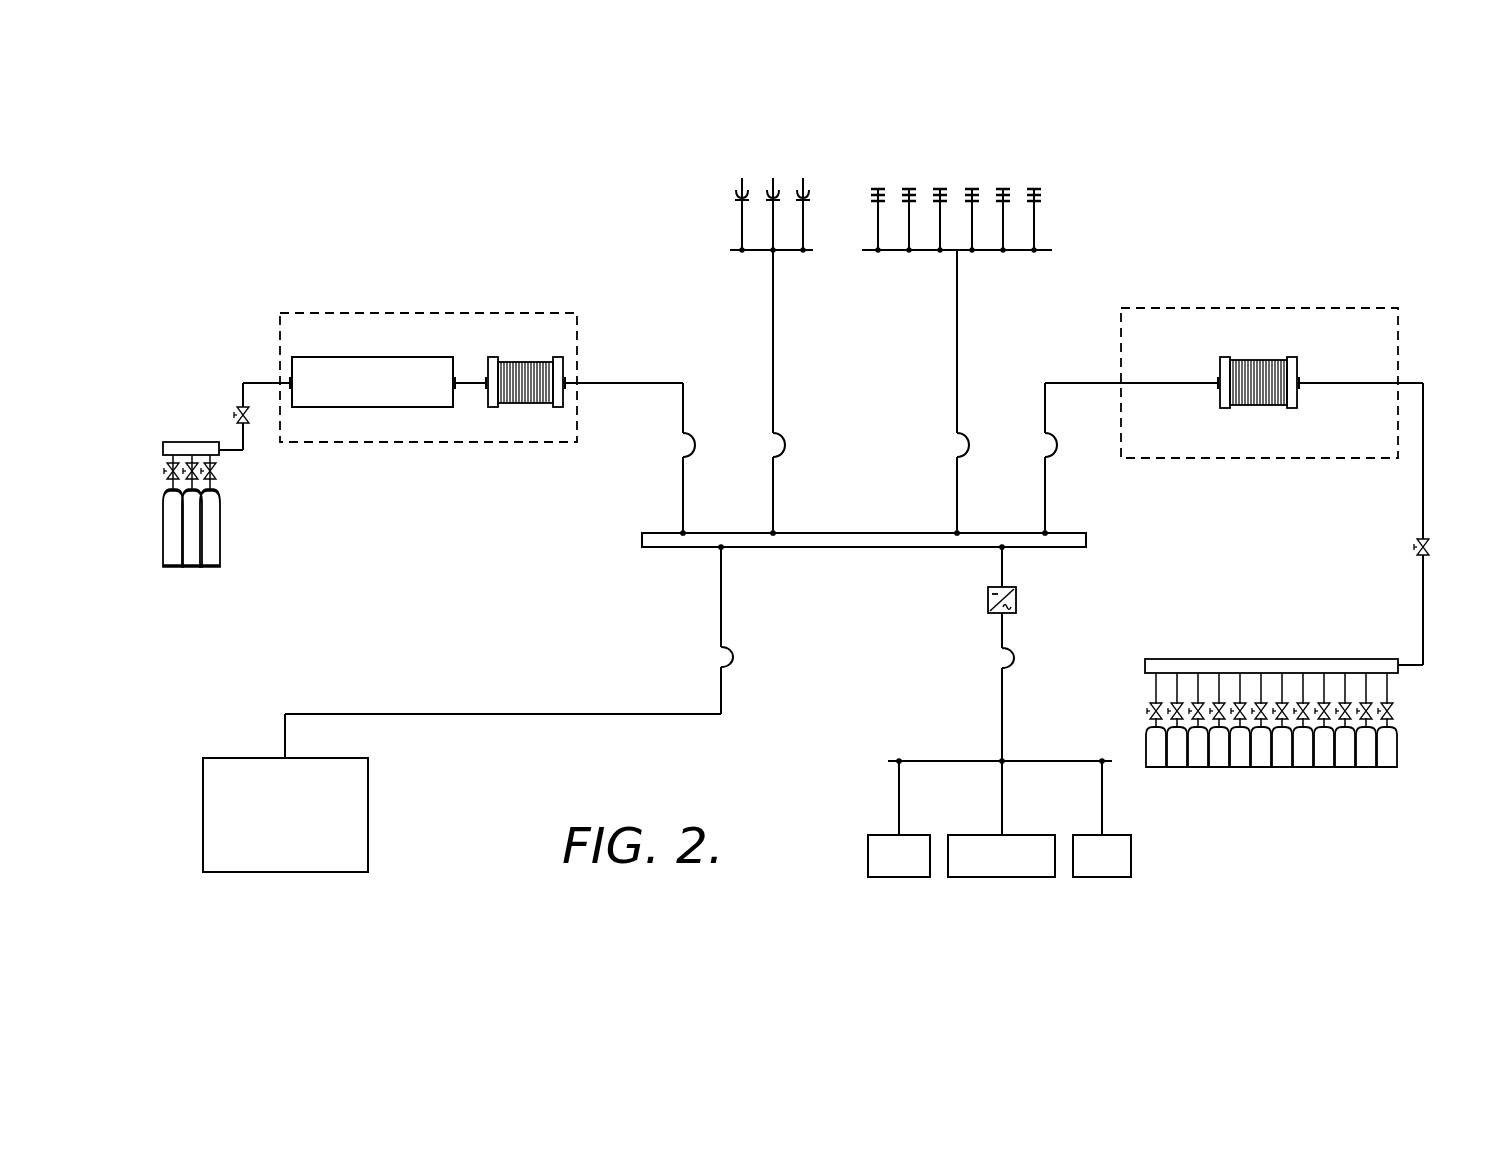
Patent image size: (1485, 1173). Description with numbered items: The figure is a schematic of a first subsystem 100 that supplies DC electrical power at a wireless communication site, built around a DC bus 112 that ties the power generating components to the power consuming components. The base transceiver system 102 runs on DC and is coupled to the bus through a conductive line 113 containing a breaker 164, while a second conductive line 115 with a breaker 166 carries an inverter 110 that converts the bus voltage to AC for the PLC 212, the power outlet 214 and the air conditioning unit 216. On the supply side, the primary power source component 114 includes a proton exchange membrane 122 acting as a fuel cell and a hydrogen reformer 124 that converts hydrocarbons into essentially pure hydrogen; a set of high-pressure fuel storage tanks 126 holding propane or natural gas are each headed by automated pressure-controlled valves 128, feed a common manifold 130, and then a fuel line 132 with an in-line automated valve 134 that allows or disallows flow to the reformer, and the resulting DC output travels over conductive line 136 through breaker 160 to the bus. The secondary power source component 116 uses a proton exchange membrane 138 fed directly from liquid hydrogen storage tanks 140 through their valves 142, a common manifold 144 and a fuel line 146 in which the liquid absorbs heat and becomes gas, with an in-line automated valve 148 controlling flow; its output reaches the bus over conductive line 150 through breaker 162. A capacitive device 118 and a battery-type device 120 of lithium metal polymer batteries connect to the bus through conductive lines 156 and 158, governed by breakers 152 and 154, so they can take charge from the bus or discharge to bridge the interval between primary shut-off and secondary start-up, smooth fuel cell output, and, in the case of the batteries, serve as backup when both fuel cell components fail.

The first subsystem 100 is at (1130, 142).
The base transceiver system 102 is at (368, 815).
The inverter 110 is at (1016, 597).
The DC bus 112 is at (1087, 540).
The conductive line 113 is at (561, 713).
The primary power source component 114 is at (410, 442).
The conductive line 115 is at (1001, 632).
The secondary power source component 116 is at (1358, 308).
The capacitive device 118 is at (730, 197).
The battery-type device 120 is at (1065, 197).
The proton exchange membrane 122 is at (523, 360).
The hydrogen reformer 124 is at (343, 357).
The fuel storage tanks 126 is at (221, 522).
The pressure-controlled valves 128 is at (214, 479).
The common manifold 130 is at (170, 442).
The fuel line 132 is at (243, 450).
The in-line automated pressure-controlled valve 134 is at (240, 408).
The conductive line 136 is at (642, 383).
The proton exchange membrane 138 is at (1223, 358).
The liquid hydrogen storage tanks 140 is at (1398, 748).
The pressure-controlled valves 142 is at (1392, 712).
The common manifold 144 is at (1192, 659).
The fuel line 146 is at (1424, 600).
The in-line automated pressure-controlled valve 148 is at (1419, 543).
The conductive line 150 is at (1073, 382).
The breaker 152 is at (784, 444).
The breaker 154 is at (969, 445).
The conductive line 156 is at (774, 326).
The conductive line 158 is at (958, 305).
The breaker 160 is at (698, 445).
The breaker 162 is at (1056, 445).
The breaker 164 is at (733, 657).
The breaker 166 is at (1013, 656).
The PLC 212 is at (901, 878).
The power outlet 214 is at (1005, 878).
The air conditioning unit 216 is at (1103, 878).